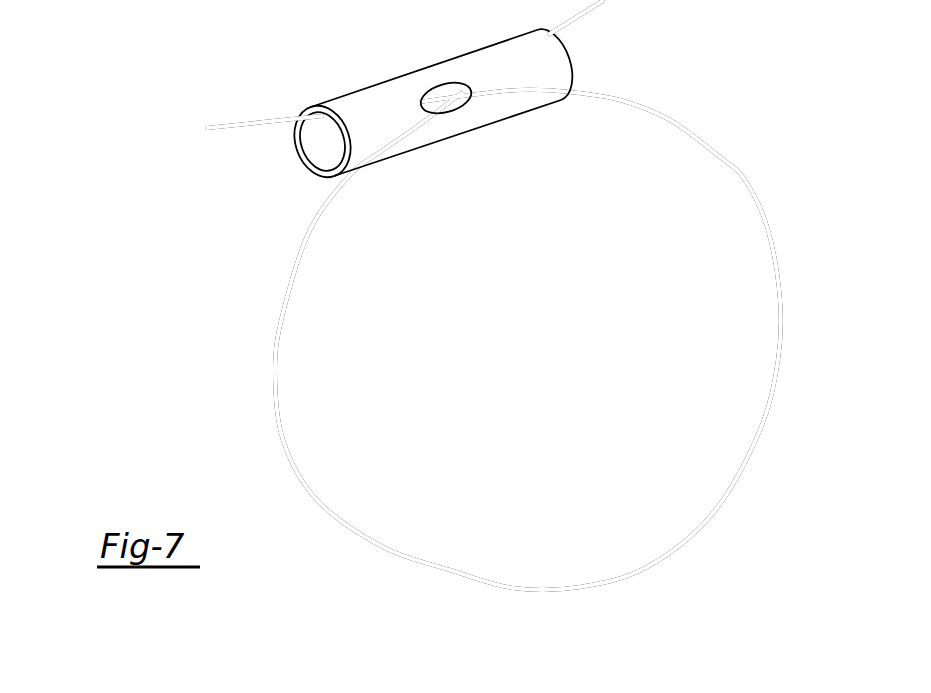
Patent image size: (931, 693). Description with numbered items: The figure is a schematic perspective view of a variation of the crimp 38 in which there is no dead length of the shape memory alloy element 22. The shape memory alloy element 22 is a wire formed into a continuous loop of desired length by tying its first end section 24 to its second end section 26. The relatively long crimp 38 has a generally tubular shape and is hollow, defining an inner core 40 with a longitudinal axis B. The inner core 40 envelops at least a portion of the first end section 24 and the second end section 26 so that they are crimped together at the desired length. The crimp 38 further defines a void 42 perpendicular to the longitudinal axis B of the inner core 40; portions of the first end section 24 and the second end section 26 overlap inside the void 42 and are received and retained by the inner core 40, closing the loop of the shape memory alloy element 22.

The shape memory alloy element 22 is at (745, 180).
The first end section 24 is at (435, 96).
The second end section 26 is at (456, 90).
The crimp 38 is at (367, 85).
The inner core 40 is at (333, 152).
The void 42 is at (458, 106).
The longitudinal axis B is at (690, 17).